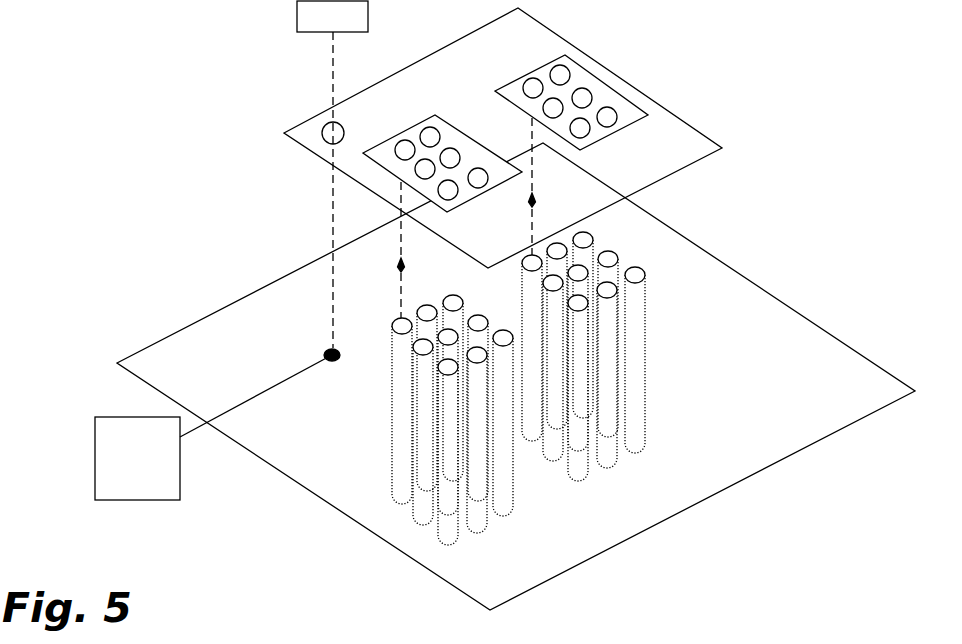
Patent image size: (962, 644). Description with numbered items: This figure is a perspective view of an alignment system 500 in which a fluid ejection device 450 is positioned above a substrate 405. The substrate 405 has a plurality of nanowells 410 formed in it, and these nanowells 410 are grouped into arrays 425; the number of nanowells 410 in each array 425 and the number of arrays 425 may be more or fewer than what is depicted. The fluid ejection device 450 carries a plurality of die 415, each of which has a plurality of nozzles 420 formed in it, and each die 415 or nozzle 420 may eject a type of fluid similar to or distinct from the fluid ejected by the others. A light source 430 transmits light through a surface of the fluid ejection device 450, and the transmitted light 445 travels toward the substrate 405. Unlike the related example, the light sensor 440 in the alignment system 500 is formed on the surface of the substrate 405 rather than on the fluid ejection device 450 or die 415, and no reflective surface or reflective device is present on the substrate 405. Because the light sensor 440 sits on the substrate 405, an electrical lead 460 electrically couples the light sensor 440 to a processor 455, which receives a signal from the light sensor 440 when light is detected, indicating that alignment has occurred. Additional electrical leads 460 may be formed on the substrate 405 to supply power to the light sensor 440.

The alignment system 500 is at (143, 63).
The substrate 405 is at (182, 365).
The nanowell 410 is at (392, 313).
The die 415 is at (382, 155).
The nozzle 420 is at (432, 130).
The array of nanowells 425 is at (437, 388).
The light source 430 is at (332, 16).
The light sensor 440 is at (320, 342).
The transmitted light 445 is at (332, 190).
The fluid ejection device 450 is at (683, 147).
The processor 455 is at (137, 458).
The electrical lead 460 is at (210, 417).